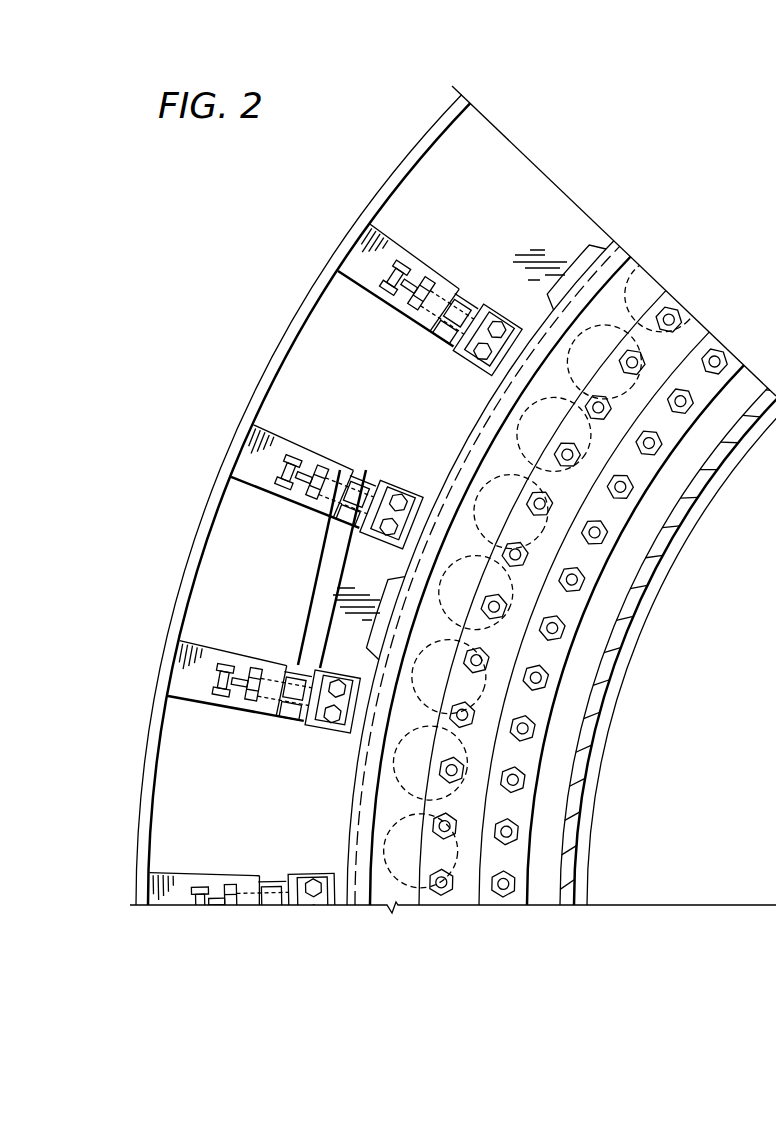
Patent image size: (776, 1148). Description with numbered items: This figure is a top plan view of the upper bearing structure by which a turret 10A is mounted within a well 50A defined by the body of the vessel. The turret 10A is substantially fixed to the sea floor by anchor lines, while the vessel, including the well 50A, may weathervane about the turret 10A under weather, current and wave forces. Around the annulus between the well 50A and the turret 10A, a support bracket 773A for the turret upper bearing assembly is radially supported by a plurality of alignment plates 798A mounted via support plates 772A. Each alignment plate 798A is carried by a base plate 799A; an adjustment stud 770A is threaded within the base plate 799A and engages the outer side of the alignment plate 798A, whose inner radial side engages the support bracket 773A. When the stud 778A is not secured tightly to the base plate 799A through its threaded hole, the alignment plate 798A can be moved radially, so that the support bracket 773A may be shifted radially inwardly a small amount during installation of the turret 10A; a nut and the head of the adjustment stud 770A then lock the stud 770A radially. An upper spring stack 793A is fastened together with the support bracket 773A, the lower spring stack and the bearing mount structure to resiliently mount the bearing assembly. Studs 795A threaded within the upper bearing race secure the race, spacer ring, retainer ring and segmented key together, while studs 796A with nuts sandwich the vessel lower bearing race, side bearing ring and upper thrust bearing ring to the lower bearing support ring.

The well 50A is at (330, 278).
The support plate 772A is at (278, 438).
The stud 778A is at (382, 500).
The support bracket 773A is at (477, 424).
The adjustment stud 770A is at (300, 487).
The alignment plate 798A is at (297, 569).
The base plate 799A is at (315, 600).
The turret 10A is at (692, 503).
The stud 795A is at (613, 537).
The stud 796A is at (500, 601).
The upper spring stack 793A is at (483, 628).